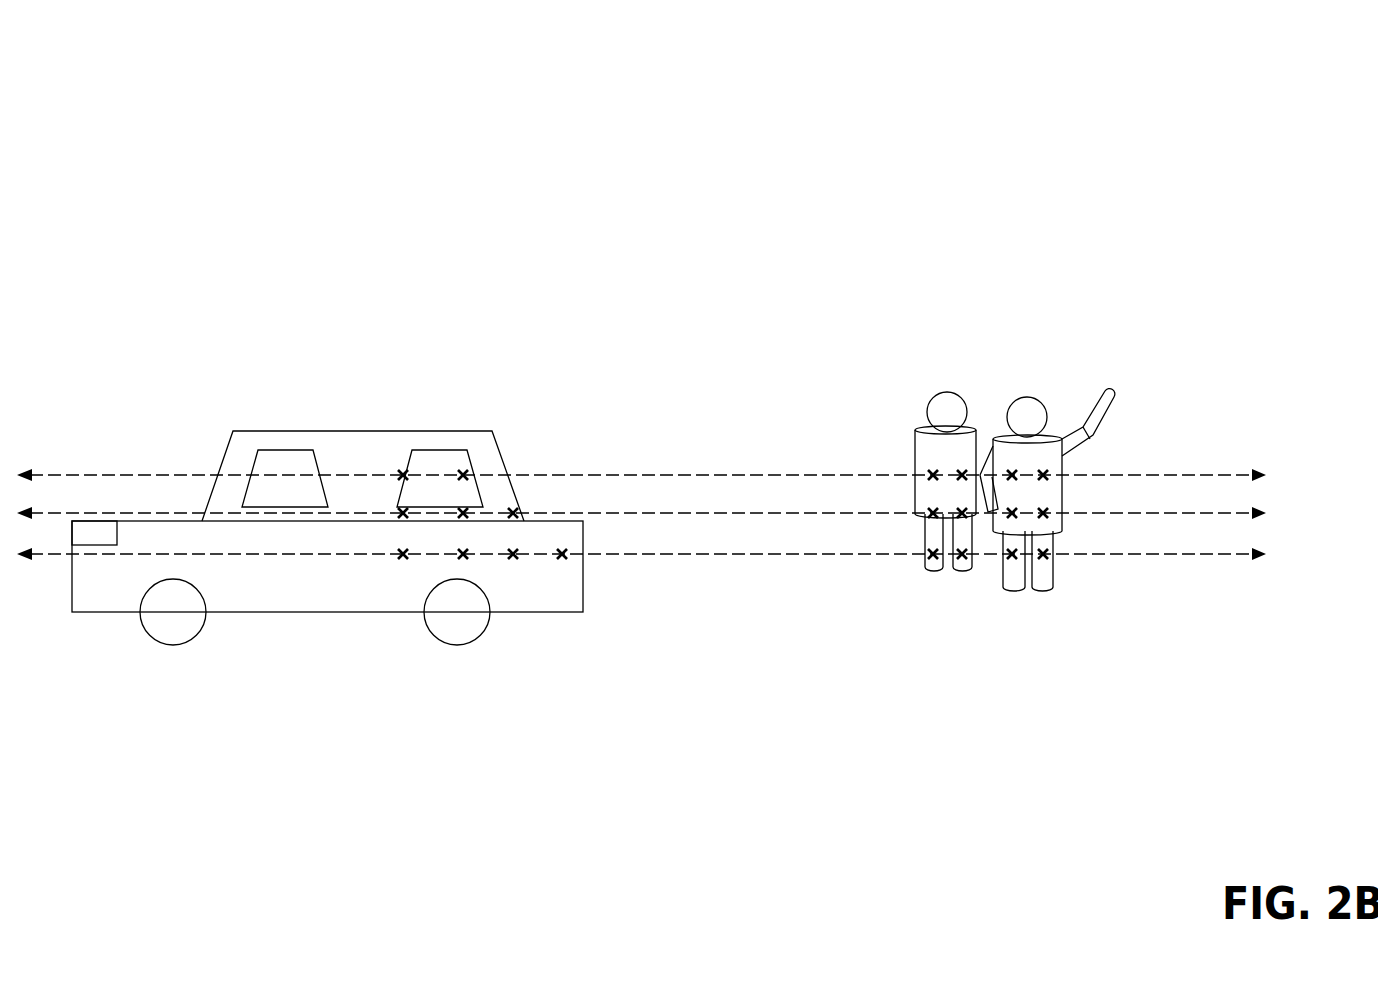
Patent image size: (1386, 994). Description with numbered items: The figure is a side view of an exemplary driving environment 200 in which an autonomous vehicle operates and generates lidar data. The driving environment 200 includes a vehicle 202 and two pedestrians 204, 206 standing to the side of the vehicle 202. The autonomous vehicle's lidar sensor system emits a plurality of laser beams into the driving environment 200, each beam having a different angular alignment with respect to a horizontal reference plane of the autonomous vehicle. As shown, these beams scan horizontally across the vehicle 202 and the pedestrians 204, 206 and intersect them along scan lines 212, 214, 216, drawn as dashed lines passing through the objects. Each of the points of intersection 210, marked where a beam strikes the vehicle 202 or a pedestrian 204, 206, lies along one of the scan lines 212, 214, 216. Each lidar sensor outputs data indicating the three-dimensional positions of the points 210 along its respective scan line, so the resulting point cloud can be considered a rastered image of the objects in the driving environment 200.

The driving environment 200 is at (100, 55).
The vehicle 202 is at (374, 423).
The pedestrian 204 is at (939, 384).
The pedestrian 206 is at (1030, 393).
The points of intersection 210 is at (558, 543).
The scan line 212 is at (1249, 463).
The scan line 214 is at (1249, 502).
The scan line 216 is at (1249, 543).